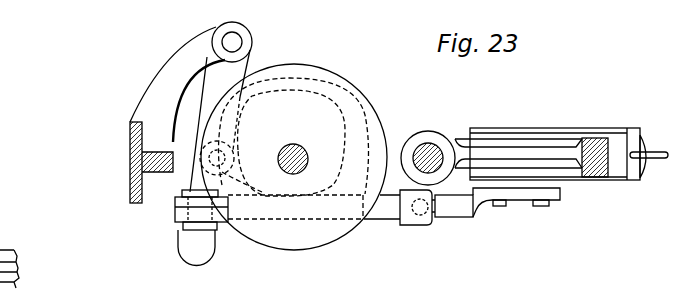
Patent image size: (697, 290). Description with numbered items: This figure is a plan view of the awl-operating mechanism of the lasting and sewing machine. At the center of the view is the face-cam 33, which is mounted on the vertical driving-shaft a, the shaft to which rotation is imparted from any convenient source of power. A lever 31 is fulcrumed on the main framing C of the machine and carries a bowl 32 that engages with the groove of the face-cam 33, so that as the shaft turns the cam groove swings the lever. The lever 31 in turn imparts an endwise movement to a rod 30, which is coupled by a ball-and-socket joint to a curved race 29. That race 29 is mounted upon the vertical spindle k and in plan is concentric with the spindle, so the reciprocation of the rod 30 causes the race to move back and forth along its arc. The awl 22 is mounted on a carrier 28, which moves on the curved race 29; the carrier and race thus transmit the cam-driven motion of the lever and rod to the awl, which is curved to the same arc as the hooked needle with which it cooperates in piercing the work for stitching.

The main framing C is at (130, 160).
The lever 31 is at (221, 107).
The bowl 32 is at (221, 159).
The face-cam 33 is at (294, 157).
The vertical driving-shaft a is at (293, 144).
The rod 30 is at (383, 208).
The vertical spindle k is at (430, 146).
The carrier 28 is at (600, 181).
The curved race 29 is at (599, 138).
The awl 22 is at (660, 158).